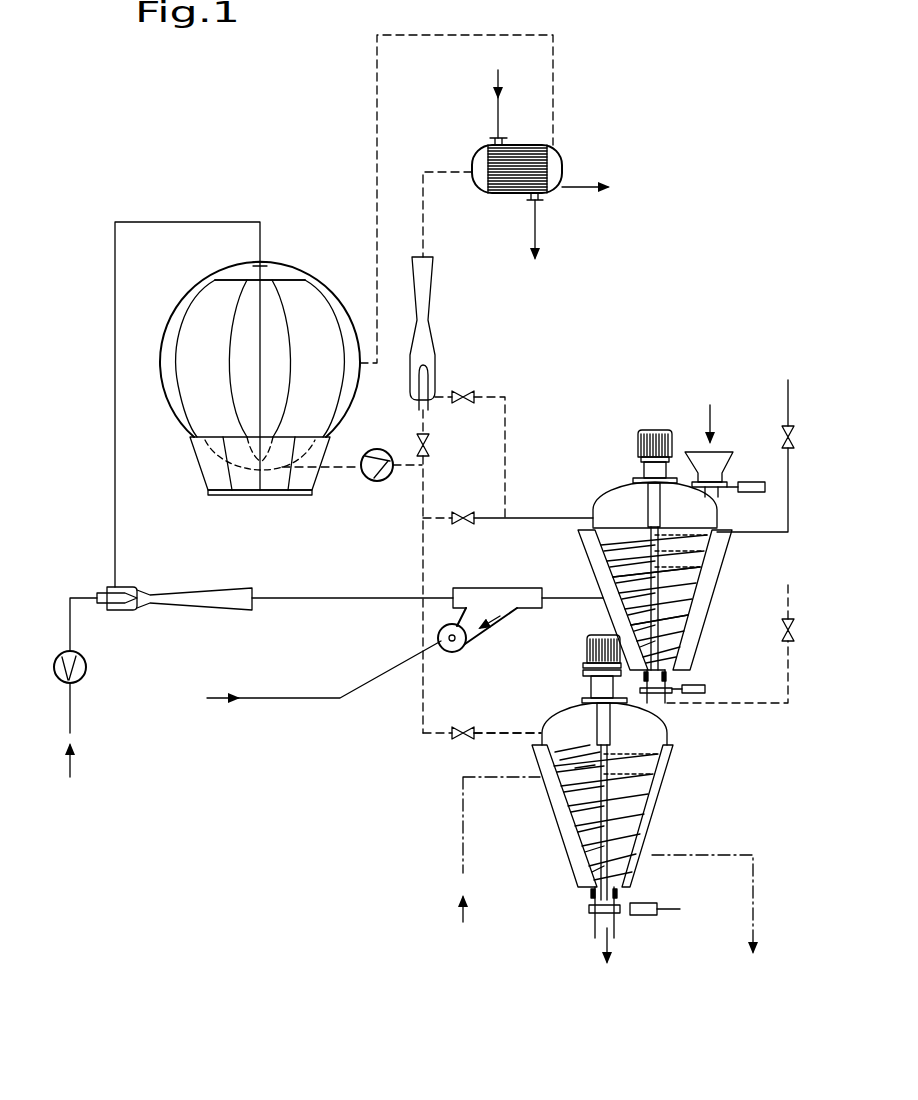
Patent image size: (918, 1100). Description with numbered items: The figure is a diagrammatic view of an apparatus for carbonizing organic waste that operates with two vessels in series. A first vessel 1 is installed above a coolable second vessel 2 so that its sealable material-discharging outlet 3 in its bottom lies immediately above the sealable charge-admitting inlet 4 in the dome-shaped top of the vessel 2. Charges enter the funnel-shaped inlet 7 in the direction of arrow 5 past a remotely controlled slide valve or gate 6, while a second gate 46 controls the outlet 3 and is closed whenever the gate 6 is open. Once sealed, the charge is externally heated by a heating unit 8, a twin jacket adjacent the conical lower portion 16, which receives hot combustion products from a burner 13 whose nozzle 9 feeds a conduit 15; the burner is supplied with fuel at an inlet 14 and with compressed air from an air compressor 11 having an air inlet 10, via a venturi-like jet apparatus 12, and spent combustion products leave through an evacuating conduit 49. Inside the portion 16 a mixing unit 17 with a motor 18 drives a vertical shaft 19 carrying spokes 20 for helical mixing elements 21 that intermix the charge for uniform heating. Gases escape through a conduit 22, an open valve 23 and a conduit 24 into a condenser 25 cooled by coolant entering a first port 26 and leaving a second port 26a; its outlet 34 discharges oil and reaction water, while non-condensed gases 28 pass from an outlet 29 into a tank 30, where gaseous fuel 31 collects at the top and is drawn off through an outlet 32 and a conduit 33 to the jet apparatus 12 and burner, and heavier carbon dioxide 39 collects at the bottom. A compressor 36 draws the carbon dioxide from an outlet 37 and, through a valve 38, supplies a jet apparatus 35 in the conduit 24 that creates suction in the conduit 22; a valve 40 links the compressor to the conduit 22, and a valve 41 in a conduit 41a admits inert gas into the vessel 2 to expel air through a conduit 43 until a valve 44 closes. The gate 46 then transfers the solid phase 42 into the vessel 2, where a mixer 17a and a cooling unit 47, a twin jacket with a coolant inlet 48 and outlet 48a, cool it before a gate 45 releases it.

The vessel 1 is at (605, 492).
The vessel 2 is at (558, 703).
The material-discharging outlet 3 is at (661, 679).
The charge-admitting inlet 4 is at (661, 708).
The arrow 5 is at (706, 404).
The slide valve or gate 6 is at (755, 482).
The funnel-shaped inlet 7 is at (720, 463).
The heating unit 8 is at (698, 602).
The nozzle 9 is at (493, 600).
The inlet 10 is at (73, 778).
The air compressor 11 is at (73, 680).
The jet apparatus 12 is at (184, 590).
The burner 13 is at (453, 652).
The fuel inlet 14 is at (309, 679).
The conduit 15 is at (563, 597).
The conical lower portion 16 is at (700, 577).
The mixing unit 17 is at (648, 552).
The mixer 17a is at (640, 792).
The motor 18 is at (653, 435).
The shaft 19 is at (650, 517).
The spokes 20 is at (712, 531).
The helical mixing elements 21 is at (670, 627).
The conduit 22 is at (543, 514).
The valve 23 is at (462, 388).
The conduit 24 is at (425, 220).
The condenser 25 is at (563, 156).
The first port 26 is at (500, 87).
The second port 26a is at (543, 251).
The outlet 34 is at (647, 182).
The jet apparatus 35 is at (425, 297).
The compressor 36 is at (377, 482).
The outlet 37 is at (335, 470).
The valve 38 is at (428, 443).
The carbon dioxide 39 is at (217, 447).
The valve 40 is at (462, 510).
The valve 41 is at (458, 743).
The conduit 41a is at (505, 731).
The solid phase 42 is at (606, 964).
The conduit 43 is at (777, 706).
The valve 44 is at (795, 635).
The slide valve or gate 45 is at (649, 912).
The slide valve or gate 46 is at (707, 693).
The cooling unit 47 is at (573, 847).
The inlet 48 is at (496, 870).
The outlet 48a is at (717, 923).
The evacuating conduit 49 is at (790, 400).
The gases 28 is at (210, 413).
The outlet 29 is at (377, 80).
The tank 30 is at (165, 341).
The gaseous fuel 31 is at (280, 273).
The outlet 32 is at (263, 262).
The conduit 33 is at (113, 393).